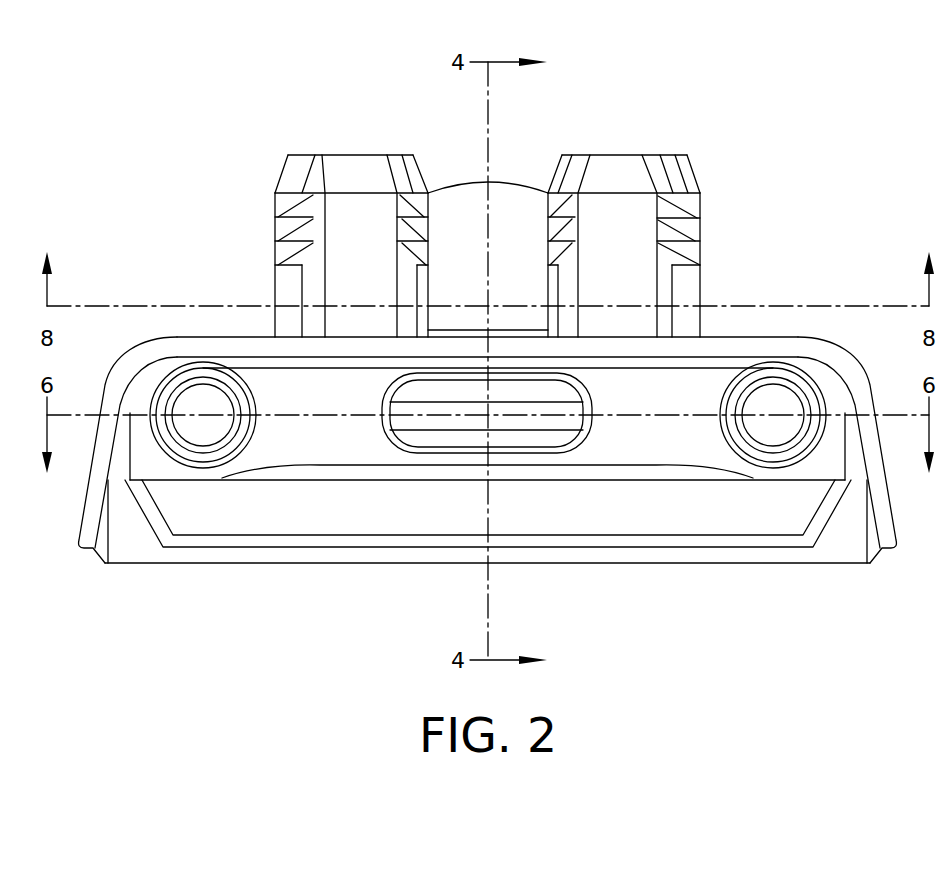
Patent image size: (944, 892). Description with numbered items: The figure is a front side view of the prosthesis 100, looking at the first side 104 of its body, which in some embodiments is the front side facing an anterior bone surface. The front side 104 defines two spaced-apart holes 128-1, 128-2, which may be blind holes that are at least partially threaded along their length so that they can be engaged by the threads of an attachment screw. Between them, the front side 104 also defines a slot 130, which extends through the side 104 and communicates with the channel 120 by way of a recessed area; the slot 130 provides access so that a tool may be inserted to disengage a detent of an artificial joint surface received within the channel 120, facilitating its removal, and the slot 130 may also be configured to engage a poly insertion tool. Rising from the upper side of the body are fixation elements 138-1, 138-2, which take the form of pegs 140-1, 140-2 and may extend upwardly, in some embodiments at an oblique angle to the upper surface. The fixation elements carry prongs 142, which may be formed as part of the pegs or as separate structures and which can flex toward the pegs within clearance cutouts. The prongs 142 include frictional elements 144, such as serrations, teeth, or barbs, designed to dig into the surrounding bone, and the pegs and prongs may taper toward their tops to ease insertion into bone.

The prosthesis 100 is at (120, 160).
The first side 104 is at (617, 437).
The channel 120 is at (687, 523).
The hole 128-1 is at (202, 433).
The hole 128-2 is at (775, 433).
The slot 130 is at (395, 445).
The fixation element 138-1 is at (389, 175).
The fixation element 138-2 is at (647, 182).
The peg 140-1 is at (342, 168).
The peg 140-2 is at (627, 167).
The prongs 142 is at (290, 282).
The frictional elements 144 is at (688, 221).